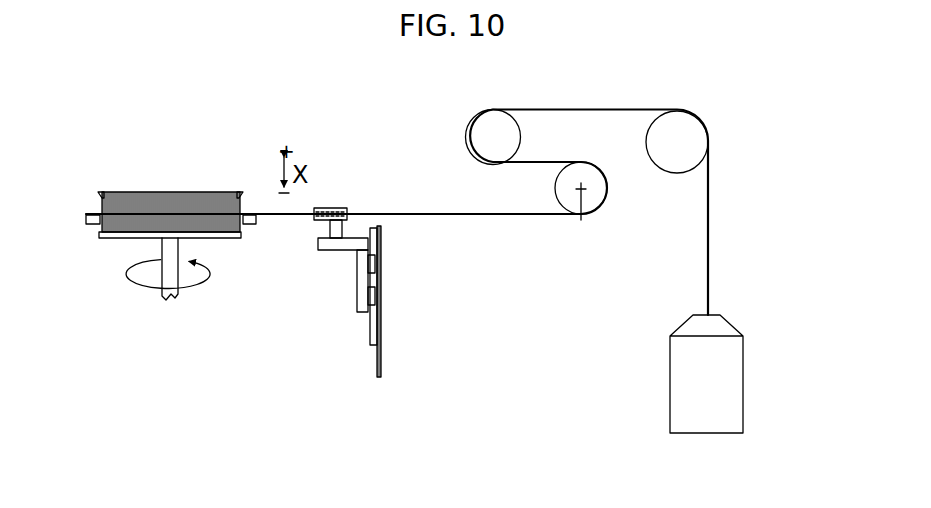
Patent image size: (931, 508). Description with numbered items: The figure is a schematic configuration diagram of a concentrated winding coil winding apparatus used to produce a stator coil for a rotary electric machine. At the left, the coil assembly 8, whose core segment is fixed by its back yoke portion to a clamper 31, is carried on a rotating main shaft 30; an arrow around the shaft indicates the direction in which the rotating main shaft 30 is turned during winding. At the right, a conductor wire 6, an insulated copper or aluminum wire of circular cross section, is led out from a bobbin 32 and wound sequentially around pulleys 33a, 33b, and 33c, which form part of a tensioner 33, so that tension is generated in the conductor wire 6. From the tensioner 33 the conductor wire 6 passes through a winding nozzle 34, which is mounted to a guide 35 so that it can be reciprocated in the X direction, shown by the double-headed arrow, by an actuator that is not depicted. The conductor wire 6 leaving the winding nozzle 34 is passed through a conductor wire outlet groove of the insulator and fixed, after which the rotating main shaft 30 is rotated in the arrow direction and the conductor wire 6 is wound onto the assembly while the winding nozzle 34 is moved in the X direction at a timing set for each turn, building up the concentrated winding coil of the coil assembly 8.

The coil assembly 8 is at (148, 188).
The rotating main shaft 30 is at (175, 298).
The clamper 31 is at (235, 240).
The bobbin 32 is at (668, 376).
The tensioner 33 is at (570, 167).
The pulley 33a is at (683, 125).
The pulley 33b is at (487, 127).
The pulley 33c is at (600, 205).
The winding nozzle 34 is at (339, 206).
The guide 35 is at (383, 282).
The conductor wire 6 is at (712, 270).